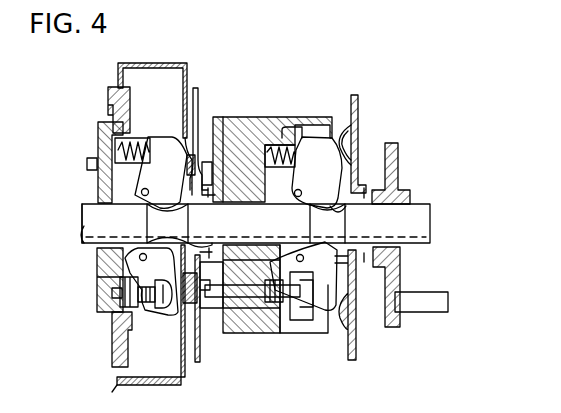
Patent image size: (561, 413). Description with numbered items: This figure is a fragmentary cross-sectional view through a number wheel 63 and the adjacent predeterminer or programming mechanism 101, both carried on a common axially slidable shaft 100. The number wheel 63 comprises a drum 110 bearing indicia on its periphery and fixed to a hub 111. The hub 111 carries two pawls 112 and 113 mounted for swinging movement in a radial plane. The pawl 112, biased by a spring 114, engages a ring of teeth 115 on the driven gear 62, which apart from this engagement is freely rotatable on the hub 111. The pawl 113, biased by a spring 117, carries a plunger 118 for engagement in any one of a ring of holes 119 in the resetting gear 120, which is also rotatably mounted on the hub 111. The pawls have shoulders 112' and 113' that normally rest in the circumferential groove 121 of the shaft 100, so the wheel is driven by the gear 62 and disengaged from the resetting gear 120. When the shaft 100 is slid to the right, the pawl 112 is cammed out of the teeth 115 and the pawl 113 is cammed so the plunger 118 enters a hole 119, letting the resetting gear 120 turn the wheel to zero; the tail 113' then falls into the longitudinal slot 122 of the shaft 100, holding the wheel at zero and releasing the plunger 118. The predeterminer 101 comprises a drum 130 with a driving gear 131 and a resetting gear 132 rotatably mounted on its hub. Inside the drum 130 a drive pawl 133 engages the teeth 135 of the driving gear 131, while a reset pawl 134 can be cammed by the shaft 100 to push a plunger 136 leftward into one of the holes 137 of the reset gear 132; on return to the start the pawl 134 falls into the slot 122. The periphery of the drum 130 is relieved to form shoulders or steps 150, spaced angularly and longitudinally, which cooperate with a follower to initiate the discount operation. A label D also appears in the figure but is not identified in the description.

The driven gear 62 is at (197, 88).
The number wheel 63 is at (118, 80).
The shaft 100 is at (84, 213).
The predeterminer or programming mechanism 101 is at (299, 335).
The drum 110 is at (167, 63).
The hub 111 is at (97, 122).
The pawl 112 is at (111, 172).
The shoulder 112' is at (163, 179).
The pawl 113 is at (80, 280).
The shoulder or tail 113' is at (151, 281).
The spring 114 is at (122, 150).
The ring of teeth 115 is at (190, 243).
The spring 117 is at (120, 322).
The plunger 118 is at (110, 312).
The ring of holes 119 is at (112, 293).
The resetting gear 120 is at (87, 163).
The circumferential groove 121 is at (160, 216).
The longitudinal slot 122 is at (432, 241).
The drum 130 is at (250, 117).
The driving gear 131 is at (357, 95).
The resetting gear 132 is at (205, 162).
The drive pawl 133 is at (314, 137).
The reset pawl 134 is at (330, 318).
The teeth 135 is at (351, 158).
The plunger 136 is at (256, 310).
The holes 137 is at (212, 308).
The shoulders or steps 150 is at (290, 333).
The direction arrow D is at (111, 390).